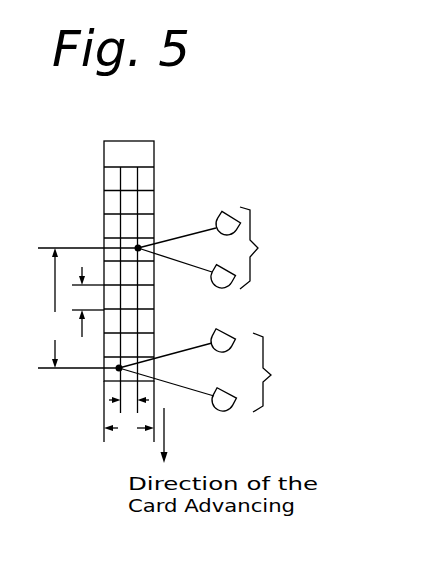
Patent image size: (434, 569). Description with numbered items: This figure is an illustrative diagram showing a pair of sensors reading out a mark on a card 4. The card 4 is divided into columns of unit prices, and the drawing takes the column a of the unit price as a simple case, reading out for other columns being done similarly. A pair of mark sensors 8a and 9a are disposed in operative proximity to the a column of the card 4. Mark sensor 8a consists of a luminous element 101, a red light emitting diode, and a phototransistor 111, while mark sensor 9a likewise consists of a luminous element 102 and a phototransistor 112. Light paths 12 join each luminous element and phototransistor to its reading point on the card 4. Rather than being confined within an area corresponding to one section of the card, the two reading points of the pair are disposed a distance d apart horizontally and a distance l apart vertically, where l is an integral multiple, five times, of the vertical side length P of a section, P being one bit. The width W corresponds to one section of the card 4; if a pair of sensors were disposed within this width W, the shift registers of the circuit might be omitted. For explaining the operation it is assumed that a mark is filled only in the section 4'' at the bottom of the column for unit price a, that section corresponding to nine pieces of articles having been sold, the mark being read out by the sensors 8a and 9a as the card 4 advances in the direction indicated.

The card 4 is at (97, 291).
The section at the bottom of the column 4'' is at (77, 407).
The column of the unit price a is at (129, 155).
The mark sensor 8a is at (263, 248).
The mark sensor 9a is at (276, 372).
The luminous element 101 is at (227, 213).
The phototransistor 111 is at (220, 292).
The luminous element 102 is at (233, 349).
The phototransistor 112 is at (228, 415).
The light beam path 12 is at (167, 307).
The vertical distance l is at (88, 308).
The vertical side length of a section P is at (85, 302).
The horizontal distance d is at (129, 400).
The width corresponding to one section W is at (129, 428).